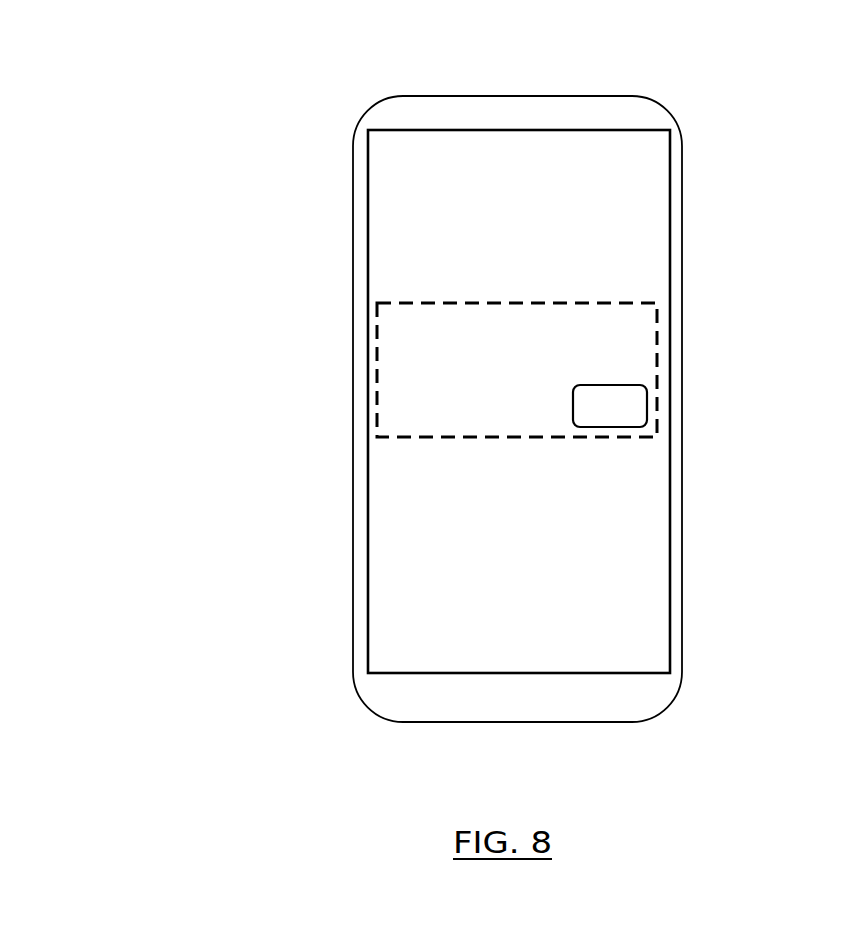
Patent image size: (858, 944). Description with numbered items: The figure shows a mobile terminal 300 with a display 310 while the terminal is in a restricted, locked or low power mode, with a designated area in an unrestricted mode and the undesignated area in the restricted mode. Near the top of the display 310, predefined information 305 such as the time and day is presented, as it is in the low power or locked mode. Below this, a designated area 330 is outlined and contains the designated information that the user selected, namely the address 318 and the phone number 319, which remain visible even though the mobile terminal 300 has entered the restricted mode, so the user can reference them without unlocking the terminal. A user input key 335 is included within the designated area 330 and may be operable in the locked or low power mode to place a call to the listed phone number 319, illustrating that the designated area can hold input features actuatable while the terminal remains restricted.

The mobile terminal 300 is at (650, 100).
The display 310 is at (672, 163).
The predefined information 305 is at (398, 210).
The designated area 330 is at (658, 320).
The address 318 is at (373, 342).
The phone number 319 is at (373, 408).
The user input key 335 is at (647, 392).